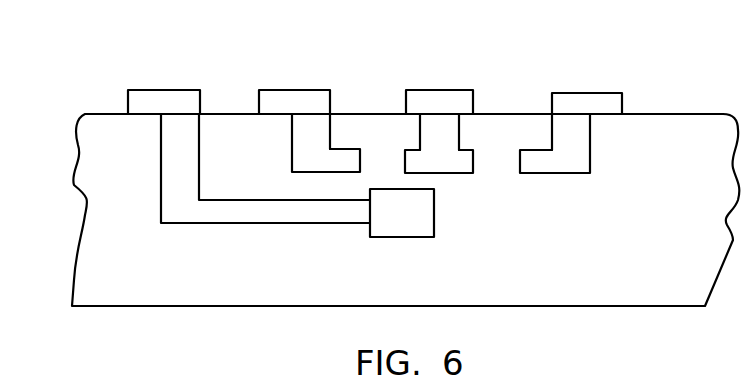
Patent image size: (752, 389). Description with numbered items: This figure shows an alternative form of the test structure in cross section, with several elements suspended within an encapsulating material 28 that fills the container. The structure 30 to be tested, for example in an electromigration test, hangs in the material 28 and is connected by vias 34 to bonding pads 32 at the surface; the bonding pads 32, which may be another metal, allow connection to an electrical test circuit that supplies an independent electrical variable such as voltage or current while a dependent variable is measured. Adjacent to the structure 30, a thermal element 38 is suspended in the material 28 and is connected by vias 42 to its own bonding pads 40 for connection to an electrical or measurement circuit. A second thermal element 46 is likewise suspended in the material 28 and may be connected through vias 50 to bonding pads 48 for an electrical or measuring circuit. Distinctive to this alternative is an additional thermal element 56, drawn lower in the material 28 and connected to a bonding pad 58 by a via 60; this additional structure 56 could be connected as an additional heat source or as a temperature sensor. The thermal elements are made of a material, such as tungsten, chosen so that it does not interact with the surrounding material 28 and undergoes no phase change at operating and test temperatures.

The encapsulating material 28 is at (405, 210).
The structure 30 is at (420, 165).
The bonding pads 32 is at (442, 100).
The vias 34 is at (442, 132).
The thermal element 38 is at (318, 160).
The bonding pads 40 is at (305, 103).
The vias 42 is at (308, 127).
The second thermal element 46 is at (568, 165).
The bonding pads 48 is at (585, 100).
The vias 50 is at (572, 132).
The additional thermal element 56 is at (405, 216).
The bonding pad 58 is at (172, 100).
The via 60 is at (183, 166).